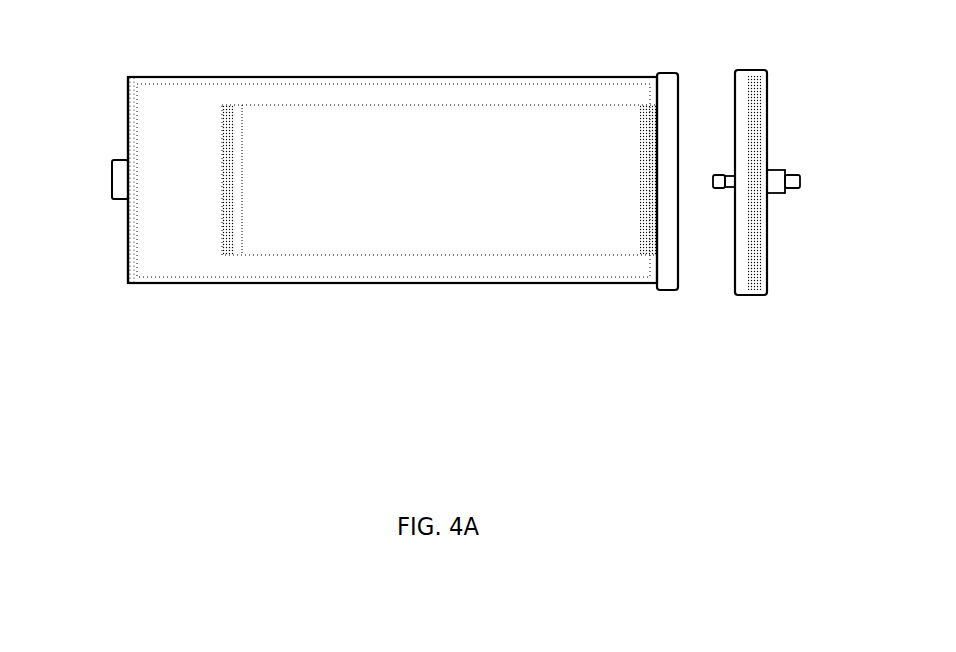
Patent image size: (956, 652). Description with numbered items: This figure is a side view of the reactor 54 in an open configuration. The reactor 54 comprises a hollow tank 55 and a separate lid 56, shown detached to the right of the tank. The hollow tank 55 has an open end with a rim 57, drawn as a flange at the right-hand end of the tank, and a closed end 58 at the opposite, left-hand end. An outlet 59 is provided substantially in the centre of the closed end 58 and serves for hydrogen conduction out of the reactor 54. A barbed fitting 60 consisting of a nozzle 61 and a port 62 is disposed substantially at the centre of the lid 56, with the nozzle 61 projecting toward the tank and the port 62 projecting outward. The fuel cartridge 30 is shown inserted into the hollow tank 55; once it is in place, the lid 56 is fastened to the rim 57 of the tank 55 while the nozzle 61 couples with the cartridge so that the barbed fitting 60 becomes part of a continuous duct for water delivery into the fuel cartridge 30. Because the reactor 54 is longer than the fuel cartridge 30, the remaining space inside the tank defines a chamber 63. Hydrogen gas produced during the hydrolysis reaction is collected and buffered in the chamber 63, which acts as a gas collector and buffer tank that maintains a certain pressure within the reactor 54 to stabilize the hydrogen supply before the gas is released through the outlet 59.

The fuel cartridge 30 is at (390, 264).
The reactor 54 is at (273, 321).
The hollow tank 55 is at (174, 293).
The lid 56 is at (752, 315).
The rim 57 is at (659, 310).
The closed end 58 is at (123, 264).
The outlet 59 is at (107, 195).
The barbed fitting 60 is at (784, 204).
The nozzle 61 is at (710, 161).
The port 62 is at (794, 158).
The chamber 63 is at (179, 118).